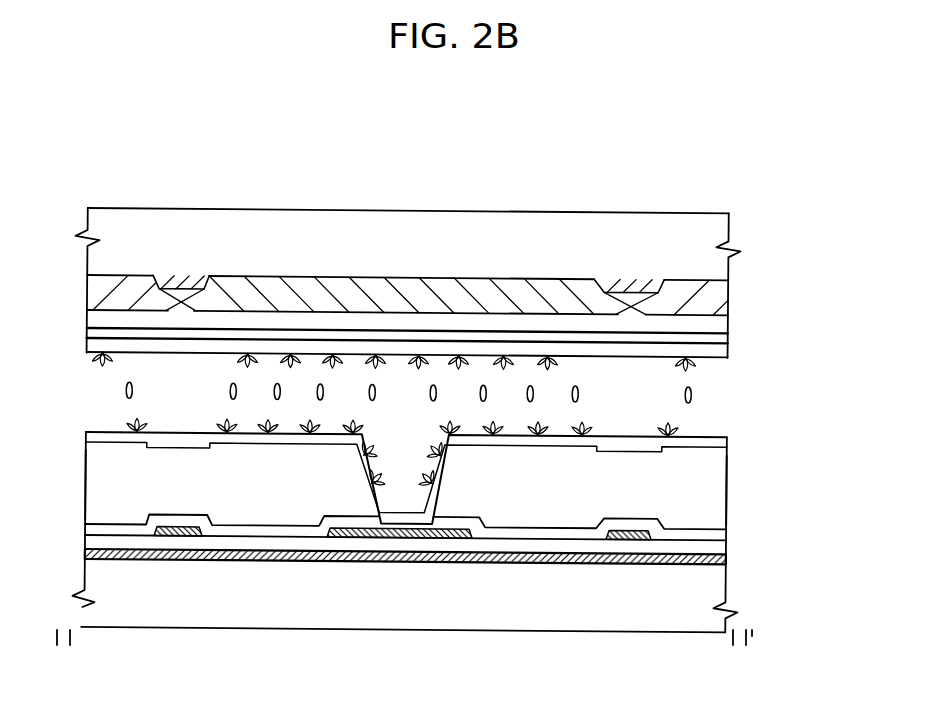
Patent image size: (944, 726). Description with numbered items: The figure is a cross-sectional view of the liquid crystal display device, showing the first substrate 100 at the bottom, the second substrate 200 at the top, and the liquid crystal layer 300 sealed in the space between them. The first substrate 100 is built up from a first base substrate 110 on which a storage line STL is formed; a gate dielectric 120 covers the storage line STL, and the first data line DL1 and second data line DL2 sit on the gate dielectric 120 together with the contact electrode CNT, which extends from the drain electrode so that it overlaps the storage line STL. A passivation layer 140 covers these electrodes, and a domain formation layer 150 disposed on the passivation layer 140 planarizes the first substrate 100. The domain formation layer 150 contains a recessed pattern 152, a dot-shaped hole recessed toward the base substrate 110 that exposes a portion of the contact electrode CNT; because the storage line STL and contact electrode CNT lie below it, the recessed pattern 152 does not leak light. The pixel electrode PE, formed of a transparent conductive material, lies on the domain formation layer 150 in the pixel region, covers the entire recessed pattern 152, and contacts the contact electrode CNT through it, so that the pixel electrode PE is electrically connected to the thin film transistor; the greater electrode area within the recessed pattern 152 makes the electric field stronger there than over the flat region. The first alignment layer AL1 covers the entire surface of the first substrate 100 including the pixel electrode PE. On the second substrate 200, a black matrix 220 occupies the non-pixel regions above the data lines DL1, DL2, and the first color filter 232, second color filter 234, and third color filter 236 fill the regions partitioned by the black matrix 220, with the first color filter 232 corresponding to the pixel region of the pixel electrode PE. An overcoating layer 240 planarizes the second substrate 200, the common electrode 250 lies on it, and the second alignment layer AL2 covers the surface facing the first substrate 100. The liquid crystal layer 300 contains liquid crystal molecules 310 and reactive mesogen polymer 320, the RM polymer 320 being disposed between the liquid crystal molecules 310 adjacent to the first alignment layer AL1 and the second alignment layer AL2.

The second substrate 200 is at (805, 355).
The second color filter 234 is at (122, 280).
The black matrix 220 is at (178, 283).
The first color filter 232 is at (392, 290).
The third color filter 236 is at (690, 288).
The overcoating layer 240 is at (725, 322).
The common electrode 250 is at (725, 338).
The second alignment layer AL2 is at (725, 351).
The liquid crystal layer 300 is at (805, 370).
The liquid crystal molecules 310 is at (700, 396).
The reactive mesogen polymer 320 is at (700, 427).
The first substrate 100 is at (805, 440).
The first alignment layer AL1 is at (723, 441).
The pixel electrode PE is at (527, 447).
The contact electrode CNT is at (358, 537).
The domain formation layer 150 is at (723, 485).
The passivation layer 140 is at (723, 534).
The gate dielectric 120 is at (723, 547).
The first data line DL1 is at (170, 527).
The recessed pattern 152 is at (405, 497).
The second data line DL2 is at (620, 533).
The storage line STL is at (723, 560).
The first base substrate 110 is at (723, 588).